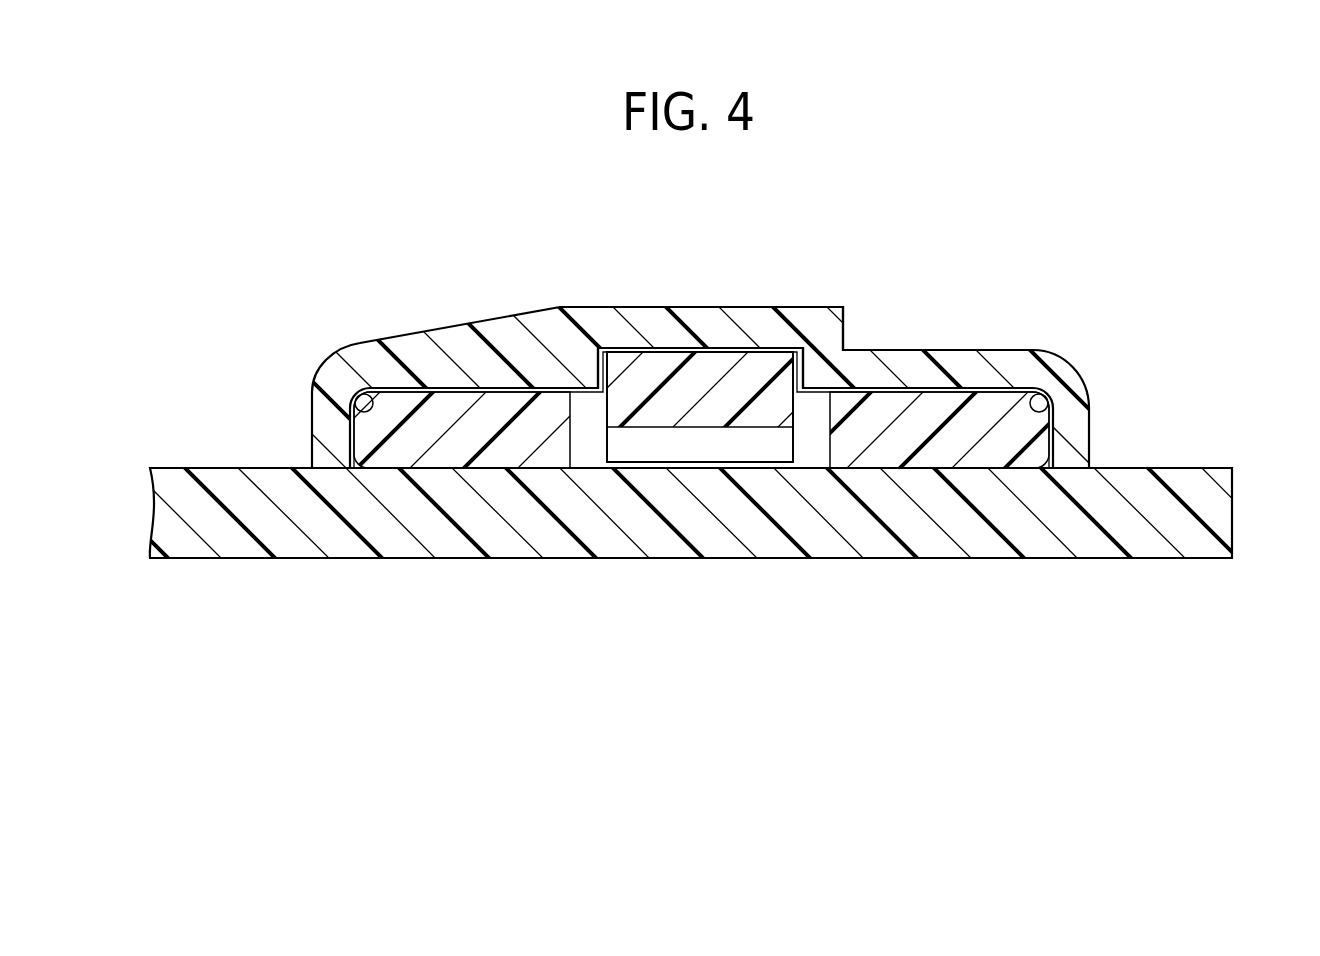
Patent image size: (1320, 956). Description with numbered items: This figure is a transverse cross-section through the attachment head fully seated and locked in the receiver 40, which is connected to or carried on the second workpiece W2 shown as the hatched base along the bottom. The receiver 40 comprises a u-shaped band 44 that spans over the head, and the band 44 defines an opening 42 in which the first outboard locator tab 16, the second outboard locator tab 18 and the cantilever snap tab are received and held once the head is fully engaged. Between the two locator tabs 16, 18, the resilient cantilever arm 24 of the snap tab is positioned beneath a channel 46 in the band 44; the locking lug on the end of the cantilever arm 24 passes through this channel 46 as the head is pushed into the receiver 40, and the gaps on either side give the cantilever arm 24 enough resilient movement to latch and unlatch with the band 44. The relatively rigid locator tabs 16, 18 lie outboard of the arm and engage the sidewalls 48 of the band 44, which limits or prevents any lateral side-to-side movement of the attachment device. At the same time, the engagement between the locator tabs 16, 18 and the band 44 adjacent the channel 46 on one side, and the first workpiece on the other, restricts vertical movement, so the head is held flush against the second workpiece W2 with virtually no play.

The second workpiece W2 is at (1187, 482).
The receiver 40 is at (466, 296).
The u-shaped band 44 is at (797, 315).
The channel 46 is at (647, 364).
The opening 42 is at (913, 397).
The sidewalls 48 is at (352, 440).
The first outboard locator tab 16 is at (463, 433).
The second outboard locator tab 18 is at (960, 437).
The resilient cantilever arm 24 is at (711, 405).